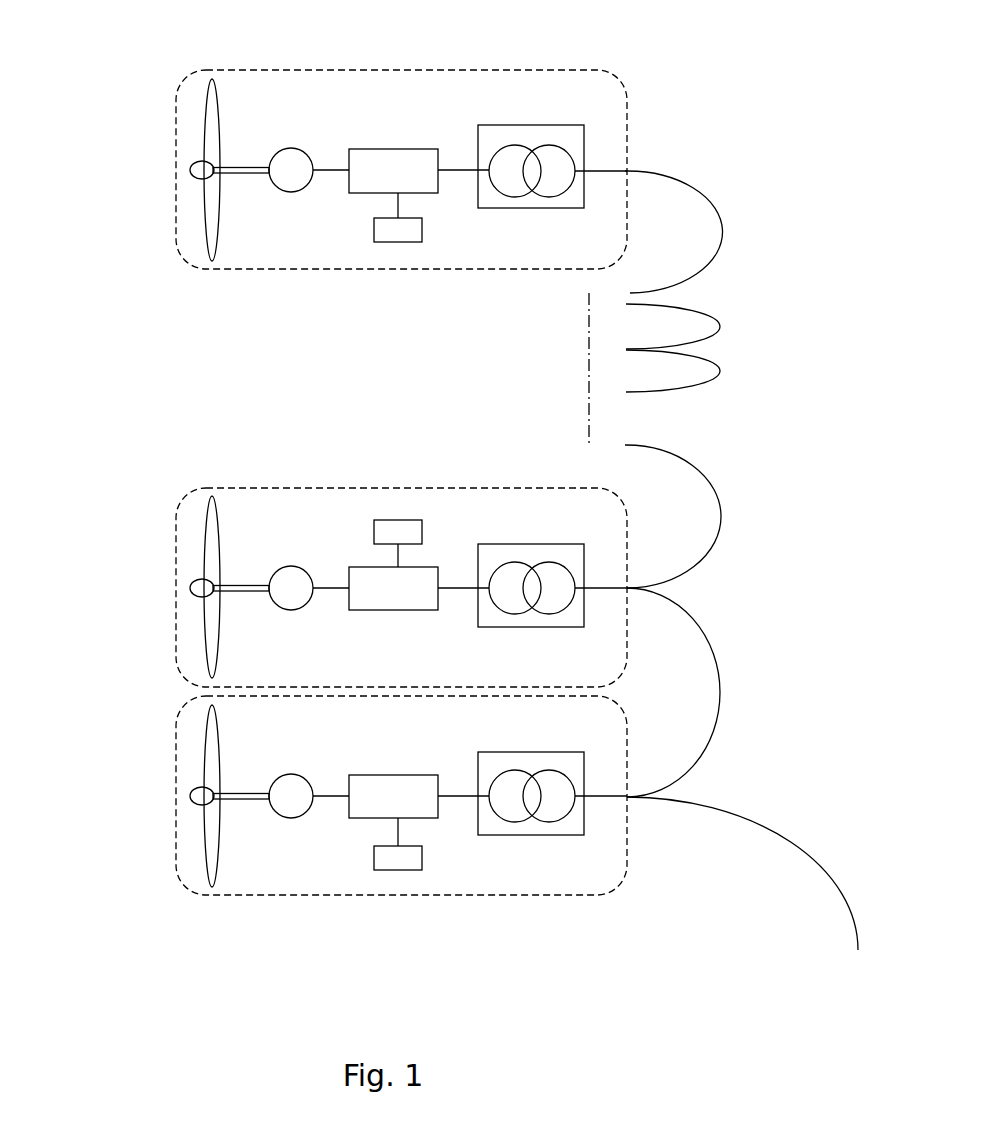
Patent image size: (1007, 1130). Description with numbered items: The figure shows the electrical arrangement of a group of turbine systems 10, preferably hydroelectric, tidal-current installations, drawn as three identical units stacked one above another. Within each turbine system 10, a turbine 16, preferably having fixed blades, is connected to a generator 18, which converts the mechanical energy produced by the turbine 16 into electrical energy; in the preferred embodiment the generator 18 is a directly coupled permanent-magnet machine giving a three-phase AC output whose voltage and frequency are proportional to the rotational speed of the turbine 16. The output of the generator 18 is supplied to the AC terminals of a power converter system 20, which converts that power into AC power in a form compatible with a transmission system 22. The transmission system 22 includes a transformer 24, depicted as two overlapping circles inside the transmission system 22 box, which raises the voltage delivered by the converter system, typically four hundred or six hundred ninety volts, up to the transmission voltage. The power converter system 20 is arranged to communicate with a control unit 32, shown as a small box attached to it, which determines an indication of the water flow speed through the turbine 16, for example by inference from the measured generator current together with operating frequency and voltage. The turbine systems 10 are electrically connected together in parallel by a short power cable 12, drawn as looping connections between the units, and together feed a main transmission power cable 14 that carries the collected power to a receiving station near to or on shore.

The turbine system 10 is at (128, 71).
The short power cable 12 is at (723, 370).
The main transmission power cable 14 is at (782, 832).
The turbine 16 is at (210, 80).
The generator 18 is at (281, 183).
The power converter system 20 is at (398, 150).
The transmission system 22 is at (584, 147).
The transformer 24 is at (560, 147).
The control unit 32 is at (388, 242).